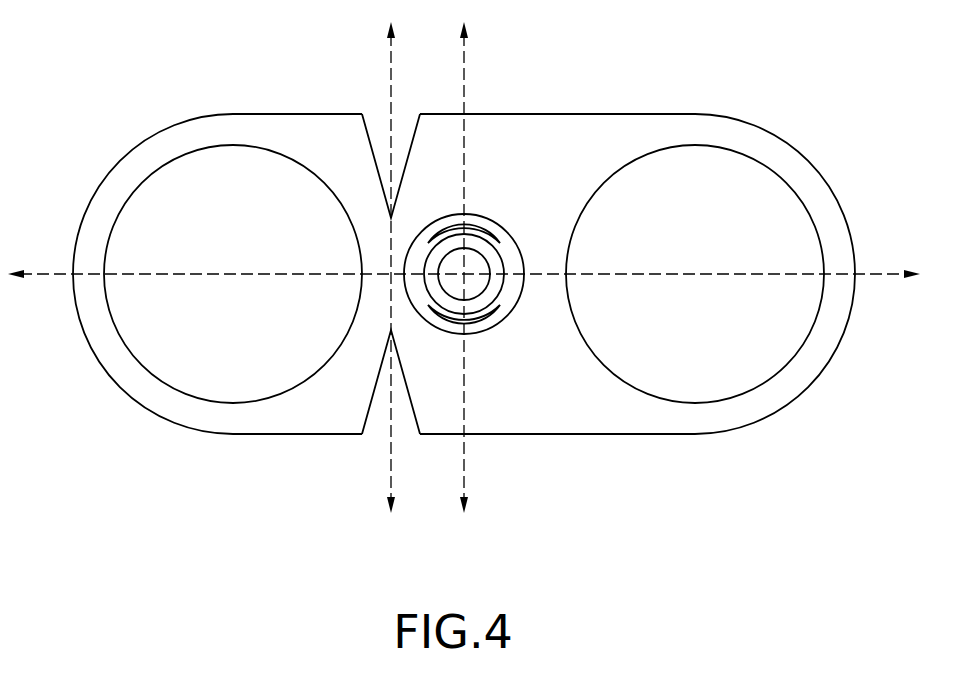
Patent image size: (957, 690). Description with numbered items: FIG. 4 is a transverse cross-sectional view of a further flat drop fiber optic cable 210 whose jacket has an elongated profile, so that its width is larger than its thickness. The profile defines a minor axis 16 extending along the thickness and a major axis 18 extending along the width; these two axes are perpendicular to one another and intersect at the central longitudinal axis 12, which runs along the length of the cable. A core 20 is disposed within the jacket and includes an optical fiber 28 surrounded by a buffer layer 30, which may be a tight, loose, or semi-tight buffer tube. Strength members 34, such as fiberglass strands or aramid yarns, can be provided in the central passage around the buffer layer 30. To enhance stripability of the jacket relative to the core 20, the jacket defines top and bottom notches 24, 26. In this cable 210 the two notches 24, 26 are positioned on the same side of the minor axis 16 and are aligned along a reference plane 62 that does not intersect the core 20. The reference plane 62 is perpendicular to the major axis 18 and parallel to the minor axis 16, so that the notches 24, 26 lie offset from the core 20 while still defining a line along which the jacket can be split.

The fiber optic cable 210 is at (722, 104).
The first notch 24 is at (379, 128).
The second notch 26 is at (376, 442).
The minor axis 16 is at (464, 57).
The major axis 18 is at (47, 276).
The reference plane 62 is at (390, 452).
The central longitudinal axis 12 is at (464, 276).
The core 20 is at (516, 250).
The optical fiber 28 is at (475, 293).
The strength members 34 is at (472, 226).
The buffer layer 30 is at (447, 300).